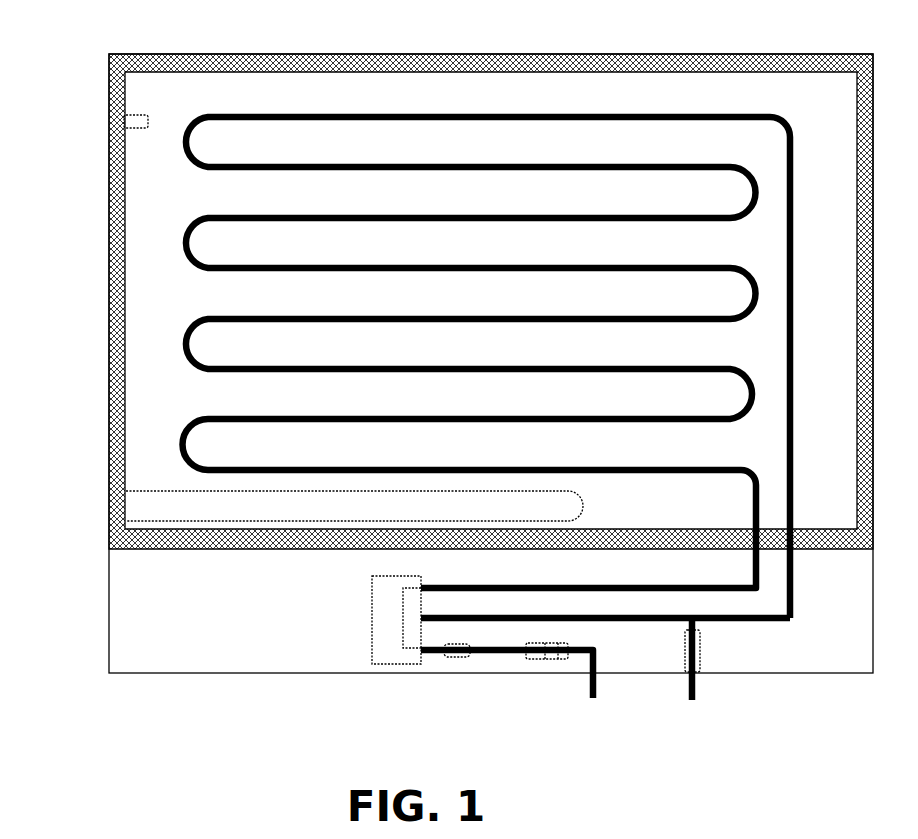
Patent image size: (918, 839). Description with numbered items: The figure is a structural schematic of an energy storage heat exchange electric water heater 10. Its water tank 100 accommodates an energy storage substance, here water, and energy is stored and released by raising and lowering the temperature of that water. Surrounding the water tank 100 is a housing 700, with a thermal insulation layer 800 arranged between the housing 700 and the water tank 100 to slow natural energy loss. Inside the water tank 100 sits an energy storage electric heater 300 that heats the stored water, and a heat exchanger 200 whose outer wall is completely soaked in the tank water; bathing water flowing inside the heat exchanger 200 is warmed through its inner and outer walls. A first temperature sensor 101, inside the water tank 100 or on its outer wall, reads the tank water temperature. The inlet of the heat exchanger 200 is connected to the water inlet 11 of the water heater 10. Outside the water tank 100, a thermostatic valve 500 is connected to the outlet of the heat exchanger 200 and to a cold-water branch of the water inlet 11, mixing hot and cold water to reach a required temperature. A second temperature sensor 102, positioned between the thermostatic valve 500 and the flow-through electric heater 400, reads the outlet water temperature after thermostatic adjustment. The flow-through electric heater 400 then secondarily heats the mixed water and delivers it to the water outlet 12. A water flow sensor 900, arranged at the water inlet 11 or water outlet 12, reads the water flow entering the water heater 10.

The energy storage heat exchange electric water heater 10 is at (459, 36).
The water inlet 11 is at (696, 700).
The water outlet 12 is at (593, 701).
The water tank 100 is at (156, 262).
The first temperature sensor 101 is at (136, 123).
The second temperature sensor 102 is at (456, 659).
The heat exchanger 200 is at (181, 142).
The energy storage electric heater 300 is at (152, 503).
The flow-through electric heater 400 is at (545, 661).
The thermostatic valve 500 is at (374, 660).
The housing 700 is at (109, 612).
The thermal insulation layer 800 is at (109, 549).
The water flow sensor 900 is at (699, 646).